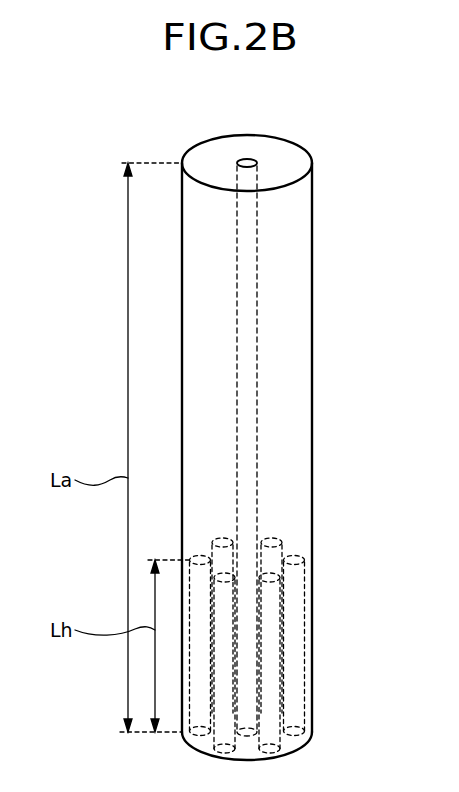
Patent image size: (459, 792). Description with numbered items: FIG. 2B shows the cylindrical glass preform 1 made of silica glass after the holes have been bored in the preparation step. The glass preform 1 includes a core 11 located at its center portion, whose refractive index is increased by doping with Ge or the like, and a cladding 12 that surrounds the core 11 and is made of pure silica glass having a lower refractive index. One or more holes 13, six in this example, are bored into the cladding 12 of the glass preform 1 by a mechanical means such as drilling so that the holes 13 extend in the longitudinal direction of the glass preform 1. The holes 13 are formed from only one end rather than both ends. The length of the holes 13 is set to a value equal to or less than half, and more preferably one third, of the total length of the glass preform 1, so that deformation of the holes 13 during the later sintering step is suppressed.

The glass preform 1 is at (428, 140).
The core 11 is at (247, 283).
The cladding 12 is at (295, 479).
The holes 13 is at (293, 657).